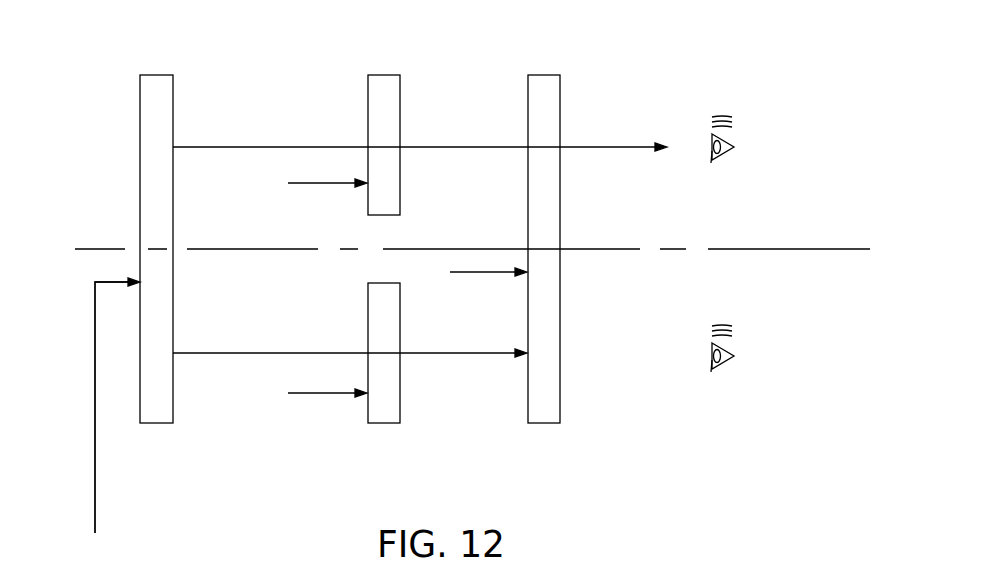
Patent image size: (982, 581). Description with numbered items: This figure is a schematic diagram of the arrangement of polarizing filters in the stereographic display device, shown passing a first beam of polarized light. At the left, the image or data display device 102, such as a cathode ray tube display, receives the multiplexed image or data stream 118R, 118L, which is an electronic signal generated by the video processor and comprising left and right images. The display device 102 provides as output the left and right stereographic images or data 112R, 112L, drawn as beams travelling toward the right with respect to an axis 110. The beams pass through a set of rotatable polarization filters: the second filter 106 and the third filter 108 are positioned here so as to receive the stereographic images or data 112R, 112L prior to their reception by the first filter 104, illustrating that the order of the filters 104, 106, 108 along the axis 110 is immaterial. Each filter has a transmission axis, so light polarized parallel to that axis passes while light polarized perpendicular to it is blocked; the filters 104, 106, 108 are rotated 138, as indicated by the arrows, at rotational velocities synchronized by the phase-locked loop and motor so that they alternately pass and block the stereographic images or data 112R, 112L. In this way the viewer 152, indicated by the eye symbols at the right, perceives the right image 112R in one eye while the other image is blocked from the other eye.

The image or data display device 102 is at (152, 75).
The first filter 104 is at (543, 75).
The second filter 106 is at (380, 75).
The third filter 108 is at (373, 423).
The axis 110 is at (755, 249).
The right stereographic image or data 112R is at (318, 147).
The left stereographic image or data 112L is at (465, 353).
The first video processor output signal (right) 118R is at (95, 483).
The first video processor output signal (left) 118L is at (152, 414).
The rotation of the filters 138 is at (317, 185).
The viewer 152 is at (726, 390).